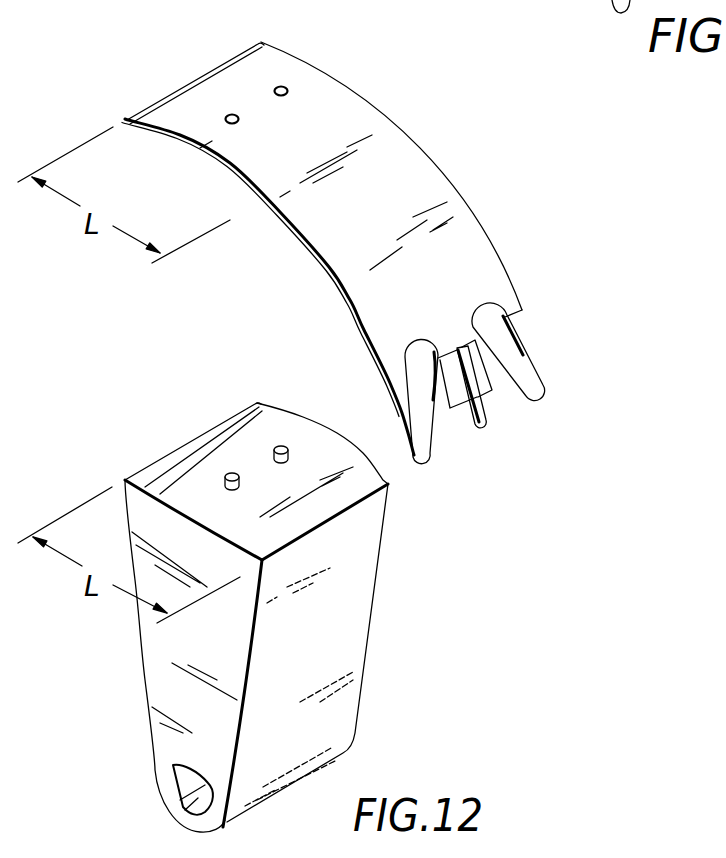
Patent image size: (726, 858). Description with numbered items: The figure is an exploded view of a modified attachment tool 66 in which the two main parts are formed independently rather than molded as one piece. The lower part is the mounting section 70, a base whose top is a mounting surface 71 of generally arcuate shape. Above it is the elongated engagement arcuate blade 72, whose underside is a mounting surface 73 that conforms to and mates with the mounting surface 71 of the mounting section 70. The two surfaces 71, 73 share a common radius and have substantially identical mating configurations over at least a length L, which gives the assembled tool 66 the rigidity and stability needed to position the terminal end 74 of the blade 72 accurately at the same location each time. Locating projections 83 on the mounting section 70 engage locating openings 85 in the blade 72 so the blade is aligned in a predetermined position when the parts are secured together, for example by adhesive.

The attachment tool 66 is at (588, 487).
The mounting section 70 is at (229, 644).
The mounting surface 71 is at (358, 484).
The elongated engagement arcuate blade 72 is at (430, 148).
The mounting surface 73 is at (202, 162).
The terminal end 74 is at (533, 347).
The locating projection 83 is at (228, 473).
The locating opening 85 is at (226, 115).